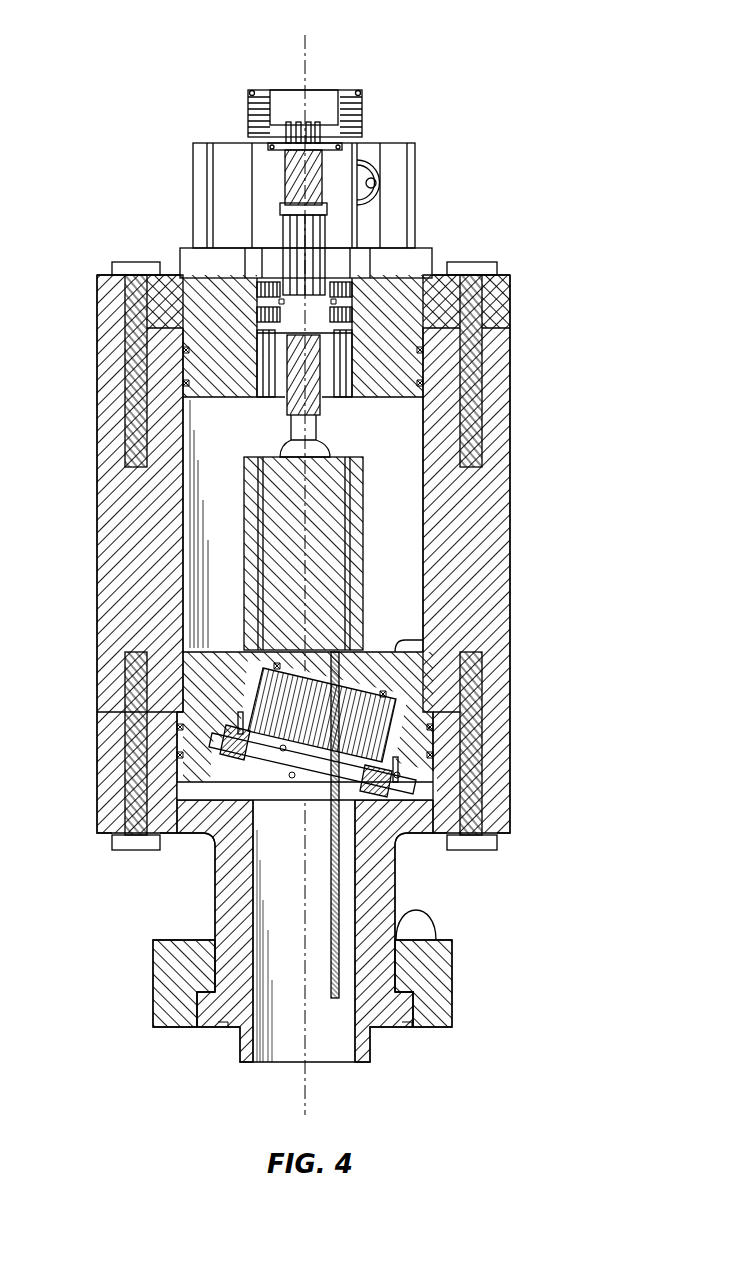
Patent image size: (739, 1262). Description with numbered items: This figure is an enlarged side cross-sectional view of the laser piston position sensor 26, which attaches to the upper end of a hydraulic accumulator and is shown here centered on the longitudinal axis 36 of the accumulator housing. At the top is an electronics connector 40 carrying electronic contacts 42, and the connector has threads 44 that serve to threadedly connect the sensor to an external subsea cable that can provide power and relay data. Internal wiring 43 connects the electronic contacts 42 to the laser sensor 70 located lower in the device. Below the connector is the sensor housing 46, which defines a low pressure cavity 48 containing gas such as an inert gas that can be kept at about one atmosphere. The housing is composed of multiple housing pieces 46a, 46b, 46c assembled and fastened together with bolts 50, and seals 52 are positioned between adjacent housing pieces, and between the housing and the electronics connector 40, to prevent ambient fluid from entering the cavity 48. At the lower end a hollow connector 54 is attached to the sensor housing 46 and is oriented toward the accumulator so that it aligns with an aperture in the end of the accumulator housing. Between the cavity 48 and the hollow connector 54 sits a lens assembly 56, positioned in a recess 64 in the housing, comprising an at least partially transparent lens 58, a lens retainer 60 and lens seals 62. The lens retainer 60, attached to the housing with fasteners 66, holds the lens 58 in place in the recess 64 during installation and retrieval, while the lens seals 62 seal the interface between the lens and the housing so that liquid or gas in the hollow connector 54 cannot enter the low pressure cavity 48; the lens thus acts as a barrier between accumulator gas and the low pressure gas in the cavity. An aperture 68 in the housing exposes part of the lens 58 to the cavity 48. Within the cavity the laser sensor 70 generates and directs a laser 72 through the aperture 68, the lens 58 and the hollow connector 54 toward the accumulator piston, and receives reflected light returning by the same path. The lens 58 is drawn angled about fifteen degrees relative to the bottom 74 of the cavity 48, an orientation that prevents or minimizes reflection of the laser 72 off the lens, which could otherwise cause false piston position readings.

The laser piston position sensor 26 is at (122, 50).
The longitudinal axis 36 is at (306, 1083).
The electronics connector 40 is at (375, 140).
The electronic contacts 42 is at (330, 125).
The internal wiring 43 is at (332, 355).
The threads 44 is at (248, 118).
The sensor housing 46 is at (125, 538).
The housing piece 46a is at (497, 300).
The housing piece 46b is at (497, 492).
The housing piece 46c is at (497, 750).
The low pressure cavity 48 is at (400, 540).
The bolts 50 is at (137, 785).
The seals 52 is at (178, 755).
The hollow connector 54 is at (278, 903).
The lens assembly 56 is at (355, 735).
The lens 58 is at (388, 742).
The lens retainer 60 is at (283, 748).
The lens seals 62 is at (245, 707).
The recess 64 is at (292, 775).
The fasteners 66 is at (397, 775).
The aperture 68 is at (347, 663).
The laser sensor 70 is at (275, 512).
The laser 72 is at (338, 878).
The bottom 74 is at (397, 652).